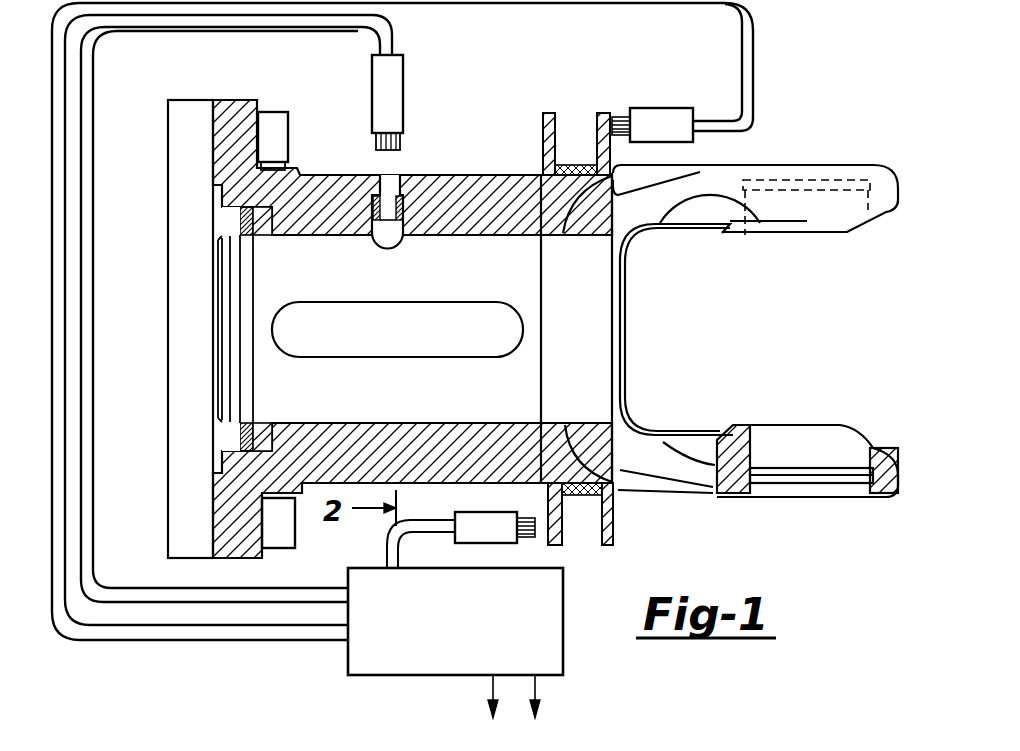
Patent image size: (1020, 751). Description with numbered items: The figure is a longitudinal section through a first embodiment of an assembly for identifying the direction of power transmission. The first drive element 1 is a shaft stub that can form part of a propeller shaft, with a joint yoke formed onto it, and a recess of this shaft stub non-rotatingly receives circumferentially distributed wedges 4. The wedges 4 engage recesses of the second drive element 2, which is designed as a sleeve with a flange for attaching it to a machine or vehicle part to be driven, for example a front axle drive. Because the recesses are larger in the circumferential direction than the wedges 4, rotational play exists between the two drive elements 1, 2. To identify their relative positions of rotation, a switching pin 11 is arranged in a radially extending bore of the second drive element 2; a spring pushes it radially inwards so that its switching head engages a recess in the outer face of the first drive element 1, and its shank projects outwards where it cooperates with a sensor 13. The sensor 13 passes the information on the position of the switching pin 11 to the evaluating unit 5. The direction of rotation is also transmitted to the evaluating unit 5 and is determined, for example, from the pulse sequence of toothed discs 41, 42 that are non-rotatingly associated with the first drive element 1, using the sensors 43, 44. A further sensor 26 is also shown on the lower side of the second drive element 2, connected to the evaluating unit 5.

The first drive element 1 is at (785, 205).
The second drive element 2 is at (300, 200).
The wedges 4 is at (373, 338).
The evaluating unit 5 is at (458, 631).
The switching pin 11 is at (382, 195).
The sensor 13 is at (390, 95).
The sensor 26 is at (440, 411).
The toothed disc 41 is at (557, 540).
The toothed disc 42 is at (610, 115).
The sensor 43 is at (498, 533).
The sensor 44 is at (650, 120).